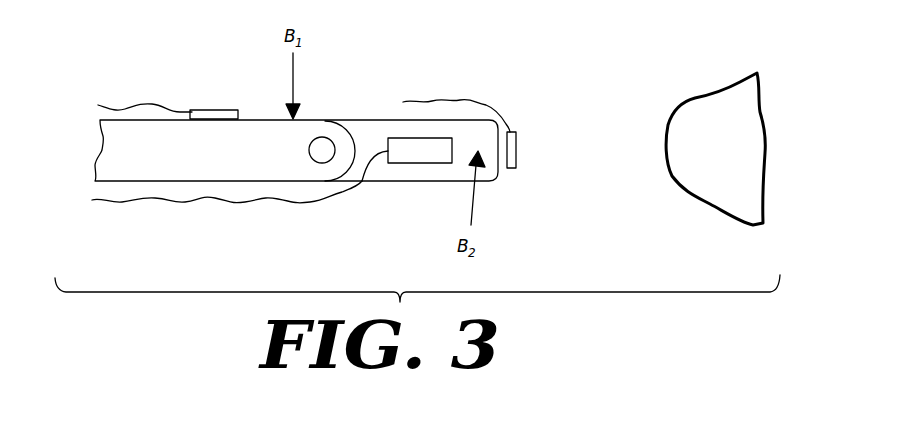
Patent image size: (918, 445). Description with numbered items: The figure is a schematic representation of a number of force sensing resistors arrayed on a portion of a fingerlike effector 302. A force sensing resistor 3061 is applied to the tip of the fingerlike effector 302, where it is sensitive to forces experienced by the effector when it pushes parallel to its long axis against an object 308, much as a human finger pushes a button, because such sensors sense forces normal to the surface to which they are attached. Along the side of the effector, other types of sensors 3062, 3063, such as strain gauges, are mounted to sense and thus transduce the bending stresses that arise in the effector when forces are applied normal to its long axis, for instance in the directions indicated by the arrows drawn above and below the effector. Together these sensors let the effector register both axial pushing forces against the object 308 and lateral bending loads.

The fingerlike effector 302 is at (216, 166).
The sensor 3061 is at (517, 149).
The sensor 3062 is at (427, 153).
The third pressure sensor 3063 is at (213, 110).
The object 308 is at (735, 165).